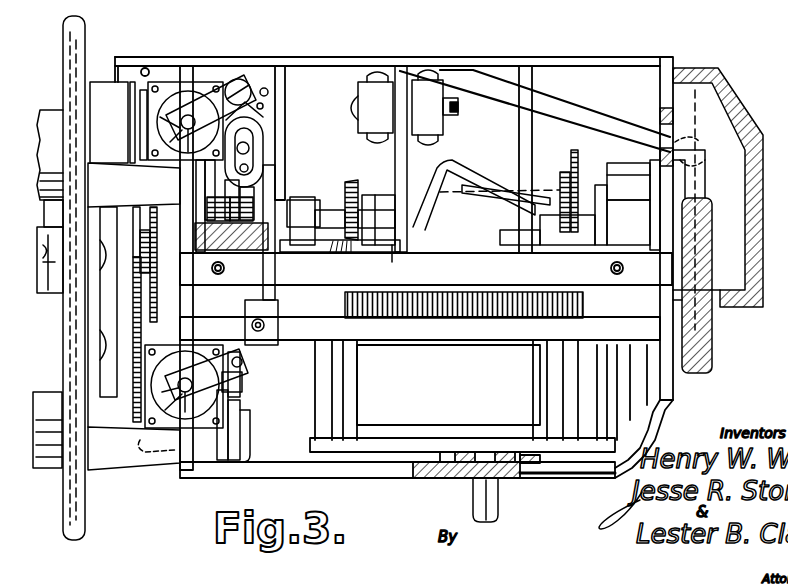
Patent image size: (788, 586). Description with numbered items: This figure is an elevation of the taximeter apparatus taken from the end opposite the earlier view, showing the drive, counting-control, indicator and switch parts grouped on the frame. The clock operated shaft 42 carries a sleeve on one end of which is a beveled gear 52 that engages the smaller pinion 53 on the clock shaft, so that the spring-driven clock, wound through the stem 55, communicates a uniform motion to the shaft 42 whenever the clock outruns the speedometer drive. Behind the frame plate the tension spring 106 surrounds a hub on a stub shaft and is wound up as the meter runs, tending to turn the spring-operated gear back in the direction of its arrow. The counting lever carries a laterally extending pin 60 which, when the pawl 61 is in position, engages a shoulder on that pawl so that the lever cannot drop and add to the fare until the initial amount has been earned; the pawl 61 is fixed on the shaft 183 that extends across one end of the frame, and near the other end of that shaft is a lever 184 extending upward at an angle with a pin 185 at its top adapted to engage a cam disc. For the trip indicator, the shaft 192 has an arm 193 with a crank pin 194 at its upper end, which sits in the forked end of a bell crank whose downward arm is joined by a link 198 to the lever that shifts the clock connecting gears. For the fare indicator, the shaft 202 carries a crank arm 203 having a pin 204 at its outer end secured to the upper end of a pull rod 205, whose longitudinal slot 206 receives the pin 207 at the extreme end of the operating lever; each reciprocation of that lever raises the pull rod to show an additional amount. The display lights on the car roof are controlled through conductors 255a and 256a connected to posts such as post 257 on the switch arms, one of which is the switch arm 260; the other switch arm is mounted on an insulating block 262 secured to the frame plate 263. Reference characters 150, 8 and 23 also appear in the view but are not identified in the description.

The handle lever 150 is at (86, 500).
The indicator shaft 202 is at (190, 116).
The crank arm 203 is at (255, 64).
The pin 204 is at (268, 90).
The pull rod 205 is at (264, 106).
The pin 207 is at (264, 142).
The longitudinal slot 206 is at (264, 166).
The tension spring 106 is at (250, 250).
The laterally extending pin 60 is at (296, 176).
The beveled gear 52 is at (352, 180).
The pinion 53 is at (332, 252).
The direction arrow 8 is at (385, 151).
The clock operated shaft 42 is at (403, 262).
The switch arm 260 is at (368, 80).
The post 257 is at (420, 92).
The insulating block 262 is at (366, 117).
The frame plate 263 is at (408, 157).
The conductor 255a is at (506, 90).
The conductor 256a is at (548, 100).
The adjusting screw 23 is at (579, 166).
The pin 185 is at (634, 183).
The lever 184 is at (651, 217).
The shaft 183 is at (462, 340).
The pawl 61 is at (278, 296).
The indicator shaft 192 is at (196, 386).
The crank pin 194 is at (245, 362).
The arm 193 is at (256, 382).
The link 198 is at (258, 420).
The stem 55 is at (500, 496).